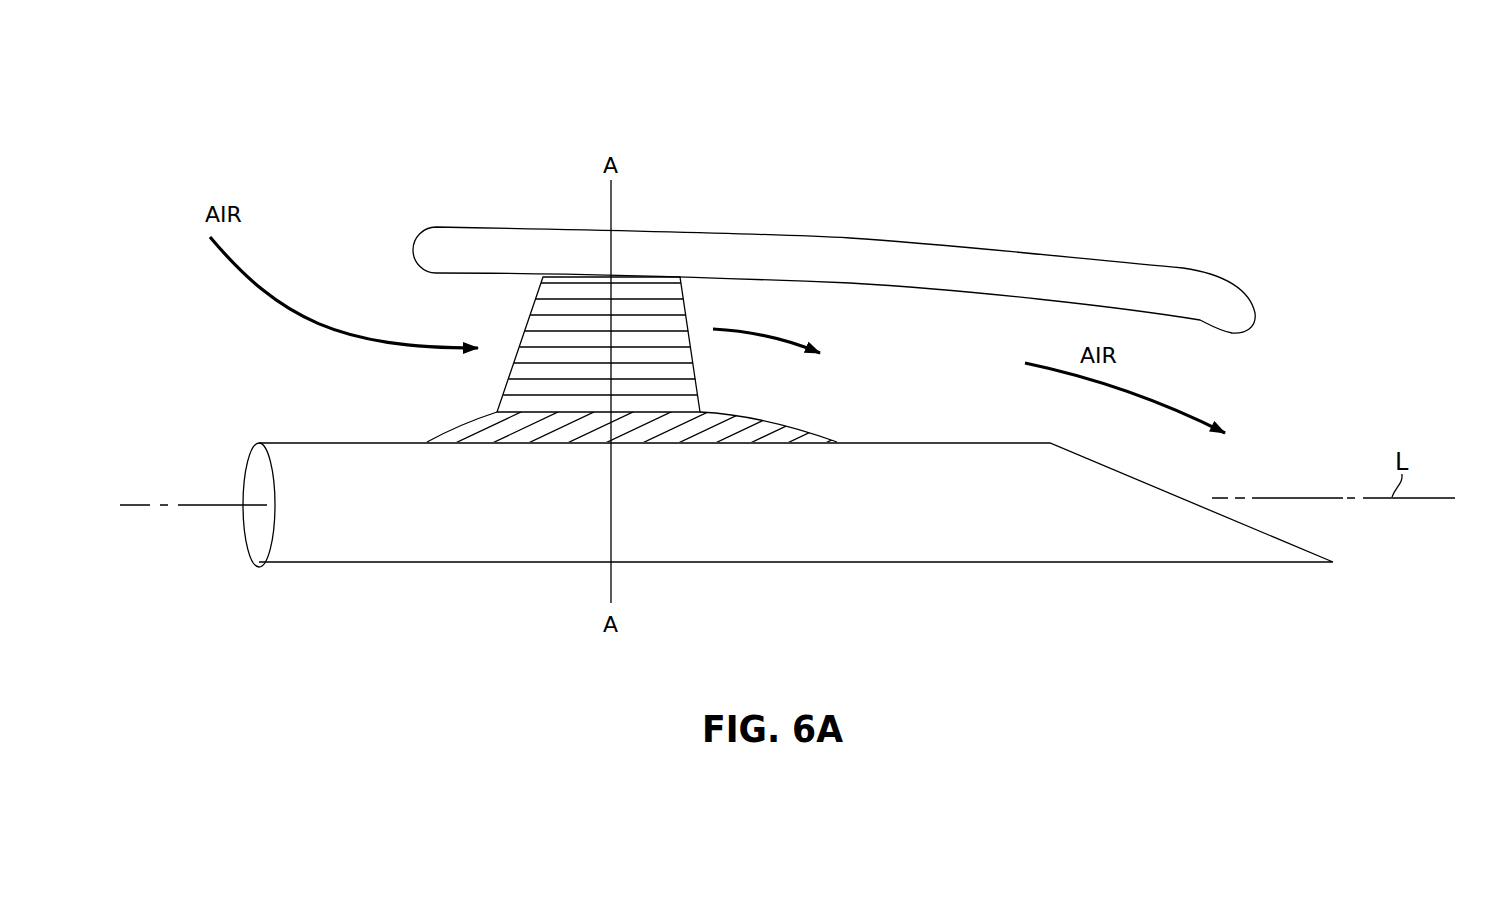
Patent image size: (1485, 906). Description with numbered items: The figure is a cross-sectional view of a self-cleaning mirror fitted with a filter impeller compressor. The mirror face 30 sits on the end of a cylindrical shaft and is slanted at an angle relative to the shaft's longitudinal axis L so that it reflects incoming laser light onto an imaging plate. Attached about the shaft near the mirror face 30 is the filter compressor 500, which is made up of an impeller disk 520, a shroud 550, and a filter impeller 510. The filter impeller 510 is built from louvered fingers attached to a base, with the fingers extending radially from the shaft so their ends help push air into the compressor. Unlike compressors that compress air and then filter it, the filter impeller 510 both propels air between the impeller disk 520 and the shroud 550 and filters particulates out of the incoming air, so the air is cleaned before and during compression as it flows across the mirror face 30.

The mirror face 30 is at (1126, 475).
The filter compressor 500 is at (542, 111).
The filter impeller 510 is at (650, 307).
The impeller disk 520 is at (462, 428).
The shroud 550 is at (900, 252).